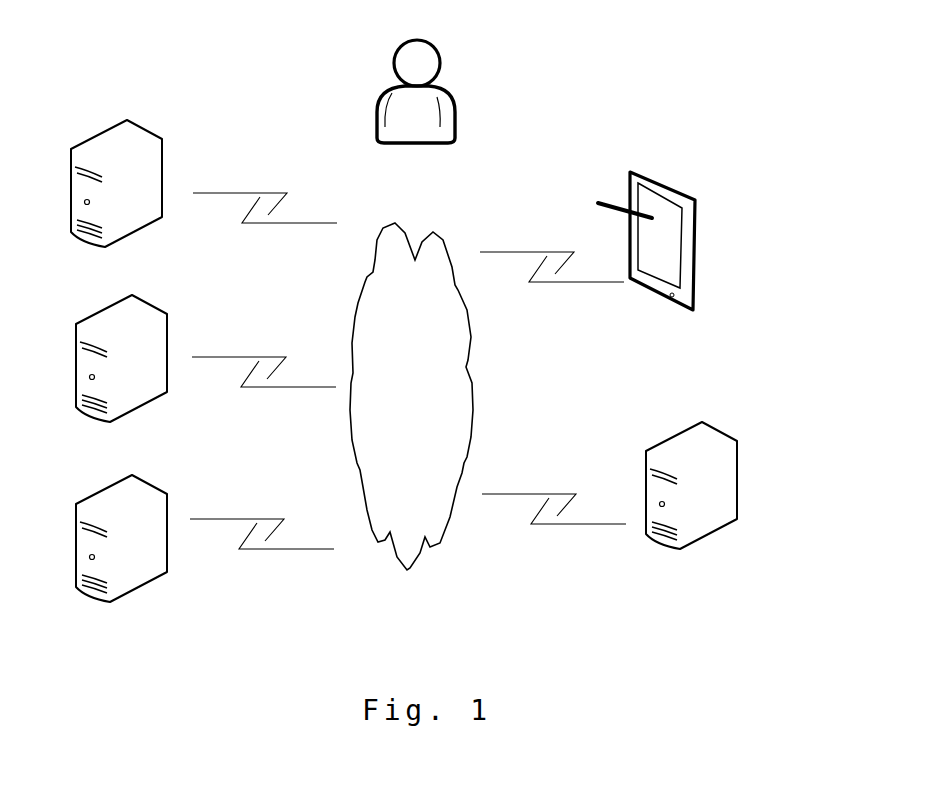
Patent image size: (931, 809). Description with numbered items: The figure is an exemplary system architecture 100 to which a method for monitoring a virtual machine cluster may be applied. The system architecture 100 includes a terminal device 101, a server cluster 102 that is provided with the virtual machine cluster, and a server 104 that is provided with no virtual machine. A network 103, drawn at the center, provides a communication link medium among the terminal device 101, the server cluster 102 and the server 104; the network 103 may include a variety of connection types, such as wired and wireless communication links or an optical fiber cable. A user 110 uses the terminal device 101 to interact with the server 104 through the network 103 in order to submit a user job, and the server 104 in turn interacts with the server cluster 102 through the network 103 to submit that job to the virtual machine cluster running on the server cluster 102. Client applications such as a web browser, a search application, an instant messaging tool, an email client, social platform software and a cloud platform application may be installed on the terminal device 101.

The system architecture 100 is at (609, 52).
The terminal device 101 is at (646, 261).
The server cluster 102 is at (119, 378).
The network 103 is at (411, 396).
The server 104 is at (691, 502).
The user 110 is at (416, 110).